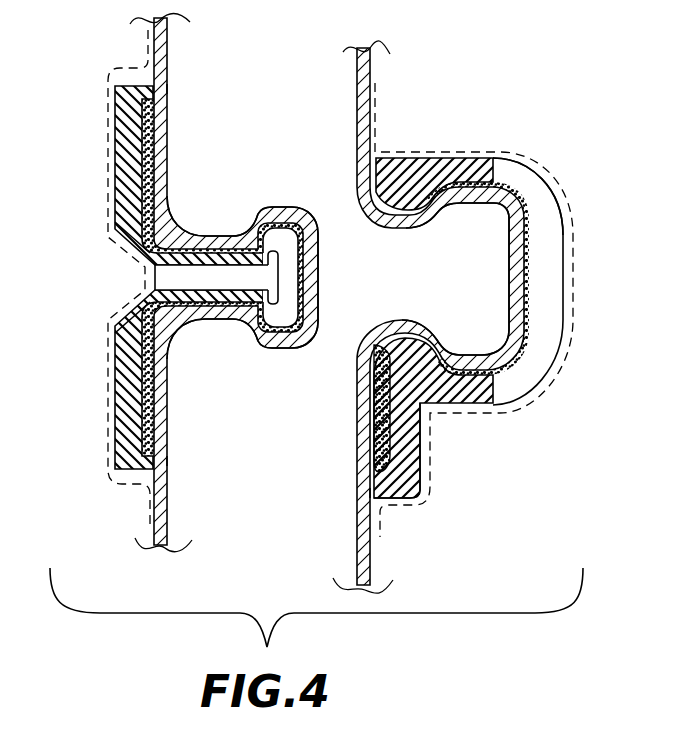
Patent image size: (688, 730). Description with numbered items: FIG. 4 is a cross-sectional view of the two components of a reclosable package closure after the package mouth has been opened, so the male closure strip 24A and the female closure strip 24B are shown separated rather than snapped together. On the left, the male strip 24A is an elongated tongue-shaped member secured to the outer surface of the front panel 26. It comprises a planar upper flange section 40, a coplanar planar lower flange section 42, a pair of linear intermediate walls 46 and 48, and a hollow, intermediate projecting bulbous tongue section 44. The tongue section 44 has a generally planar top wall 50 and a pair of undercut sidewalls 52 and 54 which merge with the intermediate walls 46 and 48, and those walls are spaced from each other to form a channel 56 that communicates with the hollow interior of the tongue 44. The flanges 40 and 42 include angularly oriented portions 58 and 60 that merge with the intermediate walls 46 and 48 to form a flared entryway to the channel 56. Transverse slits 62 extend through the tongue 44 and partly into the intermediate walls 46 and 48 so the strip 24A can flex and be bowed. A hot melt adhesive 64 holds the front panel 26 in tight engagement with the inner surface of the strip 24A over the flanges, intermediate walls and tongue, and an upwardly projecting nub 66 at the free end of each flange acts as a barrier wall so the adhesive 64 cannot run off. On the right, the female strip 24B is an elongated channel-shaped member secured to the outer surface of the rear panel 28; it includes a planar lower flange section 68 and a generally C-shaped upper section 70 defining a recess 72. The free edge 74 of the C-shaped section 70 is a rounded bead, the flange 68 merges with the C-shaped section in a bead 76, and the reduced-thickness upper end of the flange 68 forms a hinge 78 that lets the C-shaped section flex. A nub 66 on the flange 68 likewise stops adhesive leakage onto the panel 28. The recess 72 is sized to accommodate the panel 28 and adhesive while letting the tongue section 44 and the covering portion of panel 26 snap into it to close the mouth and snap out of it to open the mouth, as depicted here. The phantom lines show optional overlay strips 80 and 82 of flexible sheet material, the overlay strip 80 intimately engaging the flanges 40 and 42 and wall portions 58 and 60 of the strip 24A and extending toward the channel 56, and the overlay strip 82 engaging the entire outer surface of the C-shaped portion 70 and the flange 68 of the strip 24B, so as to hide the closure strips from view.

The male closure strip 24A is at (141, 309).
The female closure strip 24B is at (481, 310).
The front panel 26 is at (170, 37).
The rear panel 28 is at (377, 68).
The upper flange section 40 is at (125, 122).
The lower flange section 42 is at (125, 438).
The bulbous tongue section 44 is at (288, 296).
The intermediate wall 46 is at (200, 244).
The intermediate wall 48 is at (198, 318).
The top wall 50 is at (294, 262).
The undercut sidewall 52 is at (256, 206).
The undercut sidewall 54 is at (258, 344).
The channel 56 is at (185, 278).
The angularly oriented portion 58 is at (120, 240).
The angularly oriented portion 60 is at (118, 326).
The transverse slits 62 is at (288, 213).
The hot melt adhesive 64 is at (170, 150).
The nub 66 is at (170, 89).
The lower flange section 68 is at (398, 457).
The C-shaped upper section 70 is at (400, 157).
The recess 72 is at (490, 263).
The free edge 74 is at (407, 175).
The bead 76 is at (434, 340).
The hinge 78 is at (378, 431).
The overlay strip 80 is at (108, 388).
The overlay strip 82 is at (574, 331).